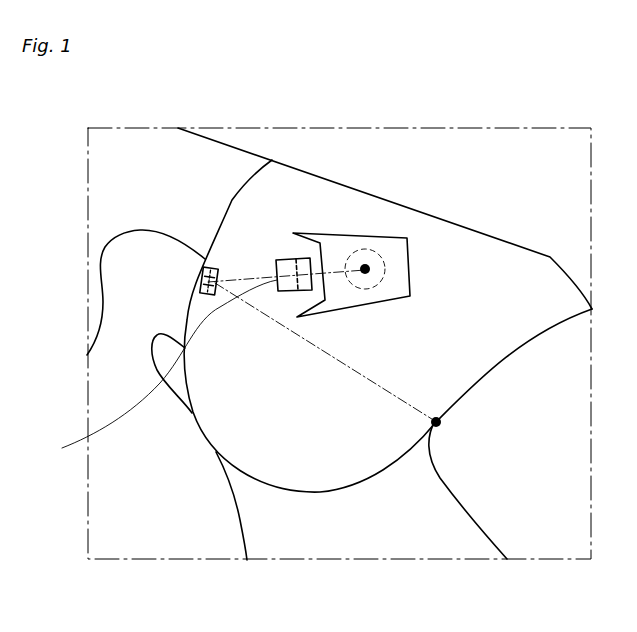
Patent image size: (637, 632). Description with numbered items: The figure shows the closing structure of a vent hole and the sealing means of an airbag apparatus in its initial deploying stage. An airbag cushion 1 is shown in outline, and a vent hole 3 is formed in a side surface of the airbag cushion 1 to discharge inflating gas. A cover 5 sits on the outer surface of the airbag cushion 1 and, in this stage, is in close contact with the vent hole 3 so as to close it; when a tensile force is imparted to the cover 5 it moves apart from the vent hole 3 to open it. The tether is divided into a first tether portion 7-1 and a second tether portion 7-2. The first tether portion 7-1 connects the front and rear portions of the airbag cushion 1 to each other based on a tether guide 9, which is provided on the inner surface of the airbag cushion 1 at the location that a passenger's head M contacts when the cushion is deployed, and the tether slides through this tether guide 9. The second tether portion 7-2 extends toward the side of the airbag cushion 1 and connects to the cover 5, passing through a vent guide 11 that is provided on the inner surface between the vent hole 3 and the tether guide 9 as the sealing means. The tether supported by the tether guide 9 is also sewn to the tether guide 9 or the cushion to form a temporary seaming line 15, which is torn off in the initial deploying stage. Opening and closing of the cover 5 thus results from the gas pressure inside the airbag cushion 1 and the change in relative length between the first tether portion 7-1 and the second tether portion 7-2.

The airbag cushion 1 is at (490, 263).
The vent hole 3 is at (370, 250).
The cover 5 is at (400, 242).
The first tether portion 7-1 is at (317, 348).
The second tether portion 7-2 is at (243, 277).
The tether guide 9 is at (212, 267).
The vent guide 11 is at (288, 260).
The temporary seaming line 15 is at (207, 295).
The passenger's head M is at (130, 235).